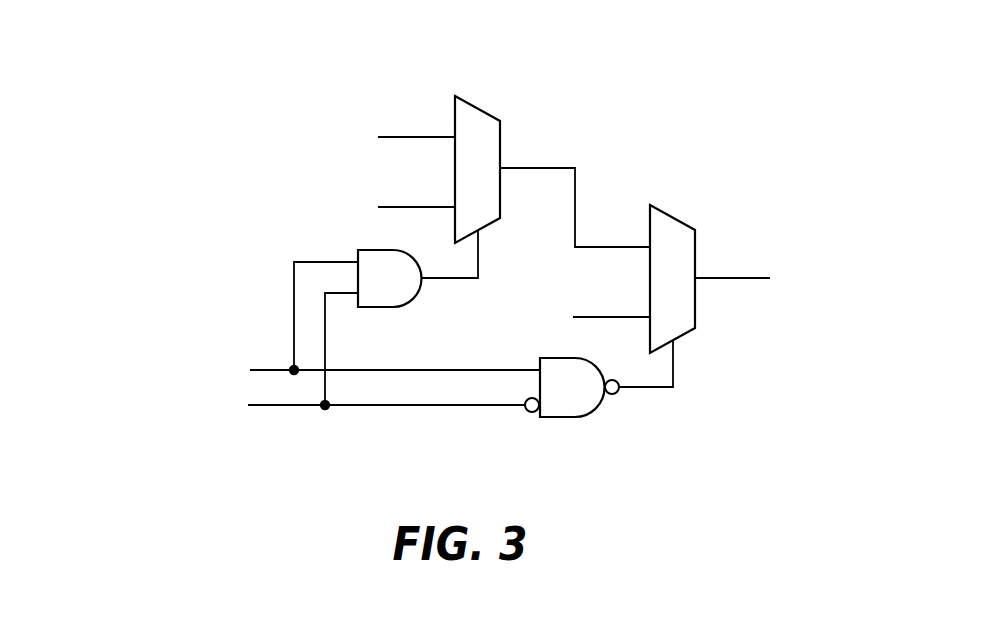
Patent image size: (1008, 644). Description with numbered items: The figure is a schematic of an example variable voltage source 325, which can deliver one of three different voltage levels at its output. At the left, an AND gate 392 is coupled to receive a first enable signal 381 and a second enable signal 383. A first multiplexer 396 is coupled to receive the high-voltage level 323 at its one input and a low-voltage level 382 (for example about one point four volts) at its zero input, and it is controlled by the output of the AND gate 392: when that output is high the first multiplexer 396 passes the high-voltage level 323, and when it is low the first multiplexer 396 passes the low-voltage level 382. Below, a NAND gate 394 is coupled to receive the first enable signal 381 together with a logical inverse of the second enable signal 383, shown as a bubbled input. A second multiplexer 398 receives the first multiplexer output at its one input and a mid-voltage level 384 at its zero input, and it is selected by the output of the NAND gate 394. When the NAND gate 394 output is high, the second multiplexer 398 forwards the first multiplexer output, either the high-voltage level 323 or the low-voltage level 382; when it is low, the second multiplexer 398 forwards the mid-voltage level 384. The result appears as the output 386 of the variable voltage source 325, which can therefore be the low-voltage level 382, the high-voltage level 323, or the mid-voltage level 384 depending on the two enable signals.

The variable voltage source VRFD 325 is at (176, 65).
The first multiplexer 396 is at (478, 96).
The high-voltage level AVDD 323 is at (303, 137).
The low-voltage level Vlow 382 is at (310, 206).
The second multiplexer 398 is at (676, 208).
The mid-voltage level CAPMID 384 is at (525, 298).
The VRFD OUTPUT 386 is at (838, 242).
The AND gate 392 is at (407, 308).
The first enable signal Vrfd_en 381 is at (145, 368).
The second enable signal Vrfd_pre_en 383 is at (95, 404).
The NAND gate 394 is at (590, 418).